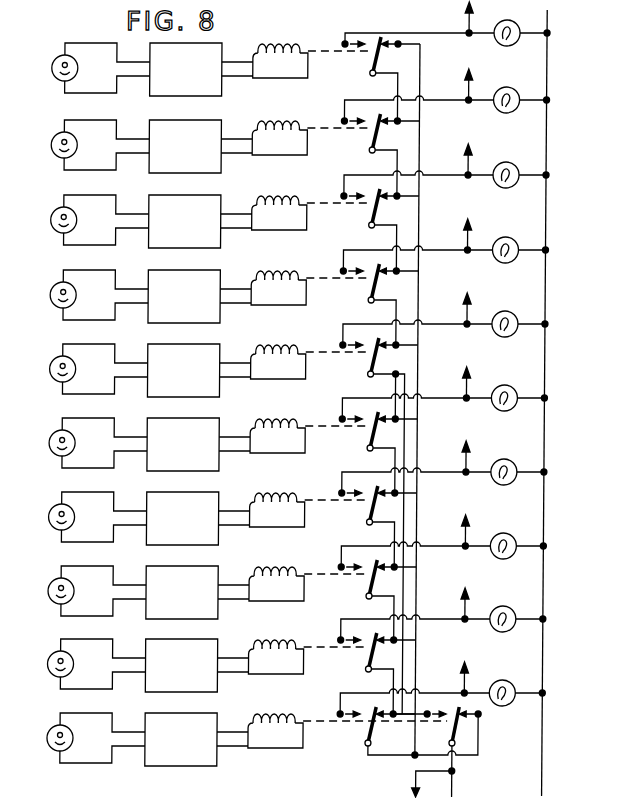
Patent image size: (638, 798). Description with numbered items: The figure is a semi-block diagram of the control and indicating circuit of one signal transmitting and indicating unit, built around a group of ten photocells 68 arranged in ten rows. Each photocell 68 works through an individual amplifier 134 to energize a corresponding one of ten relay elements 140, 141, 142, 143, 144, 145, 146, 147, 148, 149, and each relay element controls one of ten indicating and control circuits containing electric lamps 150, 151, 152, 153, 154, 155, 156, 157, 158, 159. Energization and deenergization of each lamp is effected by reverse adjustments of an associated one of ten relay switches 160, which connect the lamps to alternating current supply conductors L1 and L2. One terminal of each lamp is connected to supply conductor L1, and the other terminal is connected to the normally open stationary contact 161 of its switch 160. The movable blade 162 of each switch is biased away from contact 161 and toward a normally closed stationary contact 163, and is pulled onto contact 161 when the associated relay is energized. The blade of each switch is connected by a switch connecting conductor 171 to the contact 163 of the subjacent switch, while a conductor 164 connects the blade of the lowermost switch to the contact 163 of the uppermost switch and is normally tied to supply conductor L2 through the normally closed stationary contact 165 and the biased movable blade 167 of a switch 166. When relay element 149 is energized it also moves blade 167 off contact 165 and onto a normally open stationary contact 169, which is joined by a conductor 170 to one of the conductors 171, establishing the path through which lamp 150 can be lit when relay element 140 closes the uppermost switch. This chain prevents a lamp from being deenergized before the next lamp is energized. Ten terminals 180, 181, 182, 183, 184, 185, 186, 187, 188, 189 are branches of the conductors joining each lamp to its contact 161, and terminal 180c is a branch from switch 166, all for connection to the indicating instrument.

The photocell 68 is at (55, 59).
The amplifier 134 is at (183, 404).
The relay element 140 is at (290, 57).
The relay element 141 is at (290, 134).
The relay element 142 is at (290, 209).
The relay element 143 is at (290, 284).
The relay element 144 is at (290, 358).
The relay element 145 is at (290, 432).
The relay element 146 is at (290, 506).
The relay element 147 is at (290, 580).
The relay element 148 is at (290, 653).
The relay element 149 is at (290, 727).
The electric lamp 150 is at (506, 46).
The electric lamp 151 is at (507, 87).
The electric lamp 152 is at (507, 164).
The electric lamp 153 is at (507, 239).
The electric lamp 154 is at (507, 313).
The electric lamp 155 is at (507, 387).
The electric lamp 156 is at (507, 461).
The electric lamp 157 is at (507, 535).
The electric lamp 158 is at (507, 608).
The electric lamp 159 is at (507, 682).
The relay switch 160 is at (340, 379).
The normally open stationary contact 161 is at (356, 43).
The movable switch blade 162 is at (375, 59).
The normally closed stationary contact 163 is at (383, 44).
The conductor 164 is at (421, 274).
The normally closed stationary contact 165 is at (462, 704).
The switch 166 is at (438, 729).
The movable blade 167 is at (485, 735).
The normally open stationary contact 169 is at (433, 711).
The conductor 170 is at (410, 505).
The switch connecting conductor 171 is at (386, 73).
The terminal 180 is at (467, 20).
The terminal 181 is at (467, 83).
The terminal 182 is at (467, 163).
The terminal 183 is at (467, 242).
The terminal 184 is at (467, 311).
The terminal 185 is at (467, 388).
The terminal 186 is at (467, 462).
The terminal 187 is at (467, 535).
The terminal 188 is at (467, 608).
The terminal 189 is at (468, 673).
The branch terminal 180c is at (418, 782).
The alternating current supply conductor L1 is at (547, 776).
The alternating current supply conductor L2 is at (457, 791).